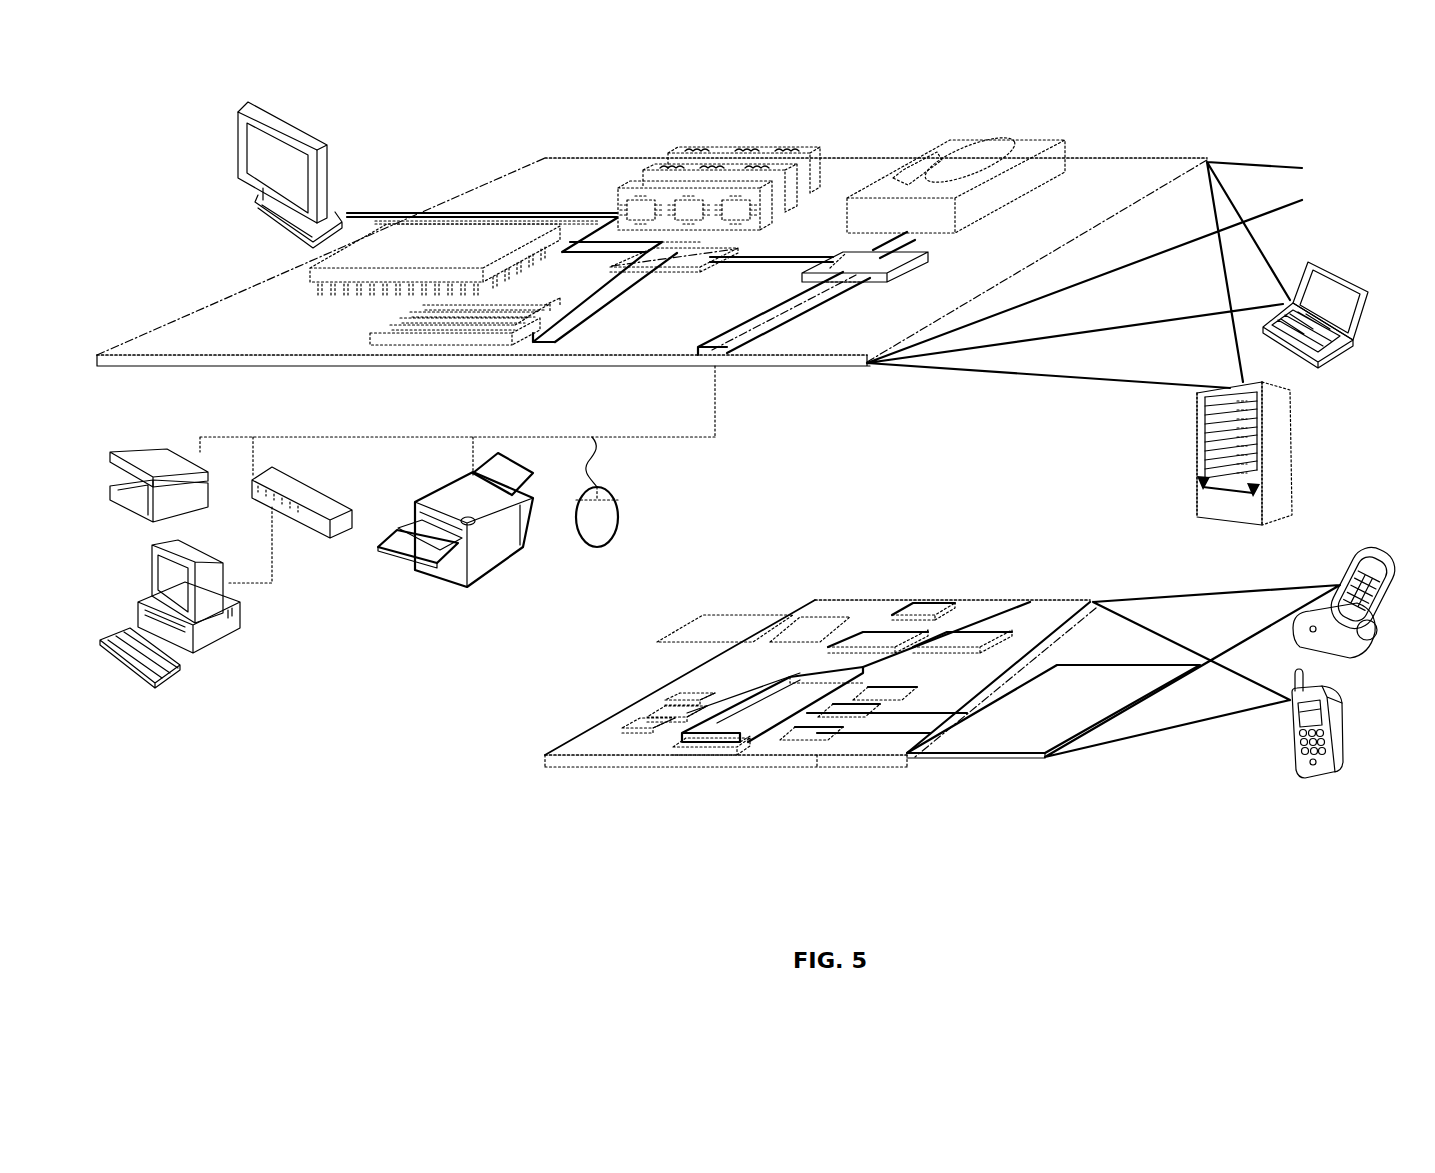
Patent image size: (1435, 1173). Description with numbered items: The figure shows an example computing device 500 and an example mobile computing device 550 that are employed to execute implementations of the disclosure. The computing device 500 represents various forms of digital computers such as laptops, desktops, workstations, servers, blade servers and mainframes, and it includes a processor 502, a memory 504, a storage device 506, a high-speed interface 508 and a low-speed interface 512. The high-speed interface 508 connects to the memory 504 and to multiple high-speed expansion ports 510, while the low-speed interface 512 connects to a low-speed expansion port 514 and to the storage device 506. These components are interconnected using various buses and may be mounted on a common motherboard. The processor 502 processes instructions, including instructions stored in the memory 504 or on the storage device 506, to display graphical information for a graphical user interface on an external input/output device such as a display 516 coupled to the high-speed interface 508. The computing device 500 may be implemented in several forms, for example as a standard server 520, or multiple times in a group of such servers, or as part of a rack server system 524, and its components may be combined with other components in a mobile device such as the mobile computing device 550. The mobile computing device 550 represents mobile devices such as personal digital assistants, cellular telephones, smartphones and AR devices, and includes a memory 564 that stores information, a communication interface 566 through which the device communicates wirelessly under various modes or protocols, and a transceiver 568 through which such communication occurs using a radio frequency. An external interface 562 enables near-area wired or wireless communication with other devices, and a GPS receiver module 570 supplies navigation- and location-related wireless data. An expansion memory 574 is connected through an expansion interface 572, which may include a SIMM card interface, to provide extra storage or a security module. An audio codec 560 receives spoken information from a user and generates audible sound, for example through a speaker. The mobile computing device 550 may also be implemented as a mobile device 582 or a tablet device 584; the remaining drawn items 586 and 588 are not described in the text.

The computing device 500 is at (1394, 868).
The processor 502 is at (310, 276).
The memory 504 is at (668, 155).
The storage device 506 is at (945, 142).
The high-speed interface 508 is at (650, 256).
The high-speed expansion ports 510 is at (392, 330).
The low-speed interface 512 is at (846, 262).
The low-speed expansion port 514 is at (727, 352).
The display 516 is at (238, 110).
The standard server 520 is at (1332, 262).
The rack server system 524 is at (1197, 482).
The mobile computing device 550 is at (517, 763).
The audio codec 560 is at (892, 693).
The external interface 562 is at (703, 750).
The memory 564 is at (647, 718).
The communication interface 566 is at (877, 637).
The transceiver 568 is at (962, 637).
The GPS receiver module 570 is at (932, 606).
The expansion interface 572 is at (790, 614).
The expansion memory 574 is at (713, 613).
The mobile device 582 is at (740, 723).
The tablet device 584 is at (1003, 742).
The controller 586 is at (817, 730).
The input/output module 588 is at (860, 693).